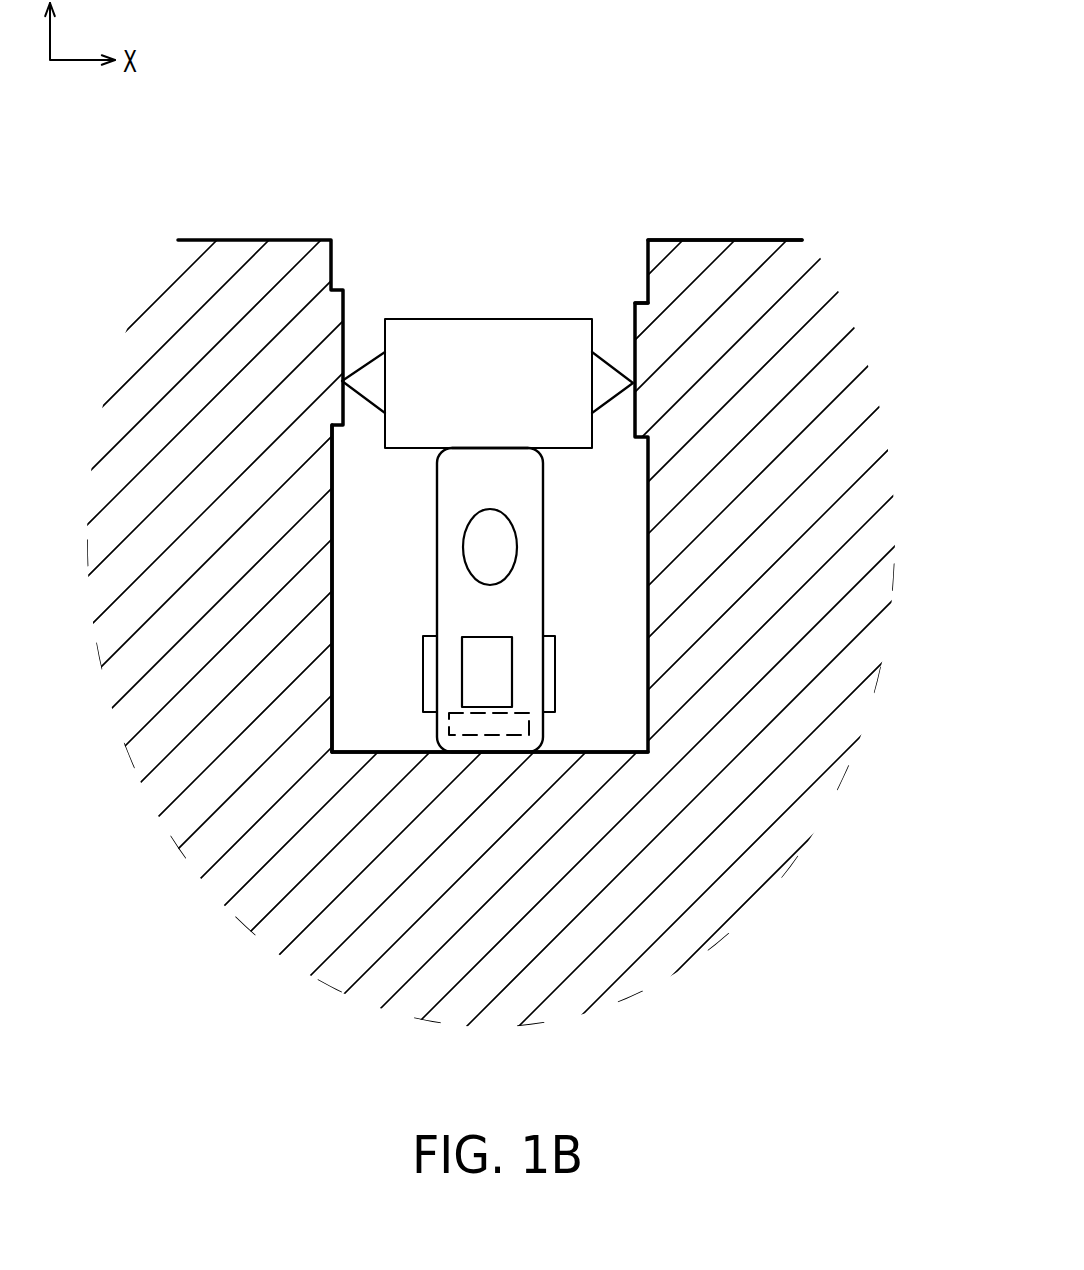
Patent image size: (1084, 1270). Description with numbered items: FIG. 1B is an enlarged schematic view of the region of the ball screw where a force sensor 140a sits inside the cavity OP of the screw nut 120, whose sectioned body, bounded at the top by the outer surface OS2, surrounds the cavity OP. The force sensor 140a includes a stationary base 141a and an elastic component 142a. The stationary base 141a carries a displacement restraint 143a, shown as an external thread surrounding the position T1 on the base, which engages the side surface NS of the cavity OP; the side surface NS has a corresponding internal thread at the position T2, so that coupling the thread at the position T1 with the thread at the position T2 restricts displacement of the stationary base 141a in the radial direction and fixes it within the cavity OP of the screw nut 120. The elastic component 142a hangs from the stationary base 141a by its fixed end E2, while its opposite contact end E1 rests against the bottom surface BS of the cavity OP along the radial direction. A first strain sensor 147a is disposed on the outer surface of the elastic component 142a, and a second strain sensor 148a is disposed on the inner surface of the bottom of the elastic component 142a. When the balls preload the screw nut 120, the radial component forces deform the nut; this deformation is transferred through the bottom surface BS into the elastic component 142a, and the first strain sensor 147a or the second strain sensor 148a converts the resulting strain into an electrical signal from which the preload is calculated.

The screw nut 120 is at (775, 335).
The force sensor 140a is at (433, 268).
The stationary base 141a is at (507, 343).
The elastic component 142a is at (517, 595).
The displacement restraint 143a is at (574, 232).
The position on the stationary base T1 is at (600, 370).
The first strain sensor 147a is at (548, 675).
The second strain sensor 148a is at (475, 735).
The outer surface OS2 is at (708, 240).
The position on the side surface of the cavity T2 is at (638, 332).
The contact end E1 is at (547, 745).
The fixed end E2 is at (543, 463).
The side surface NS is at (349, 568).
The bottom surface BS is at (408, 736).
The cavity OP is at (598, 718).